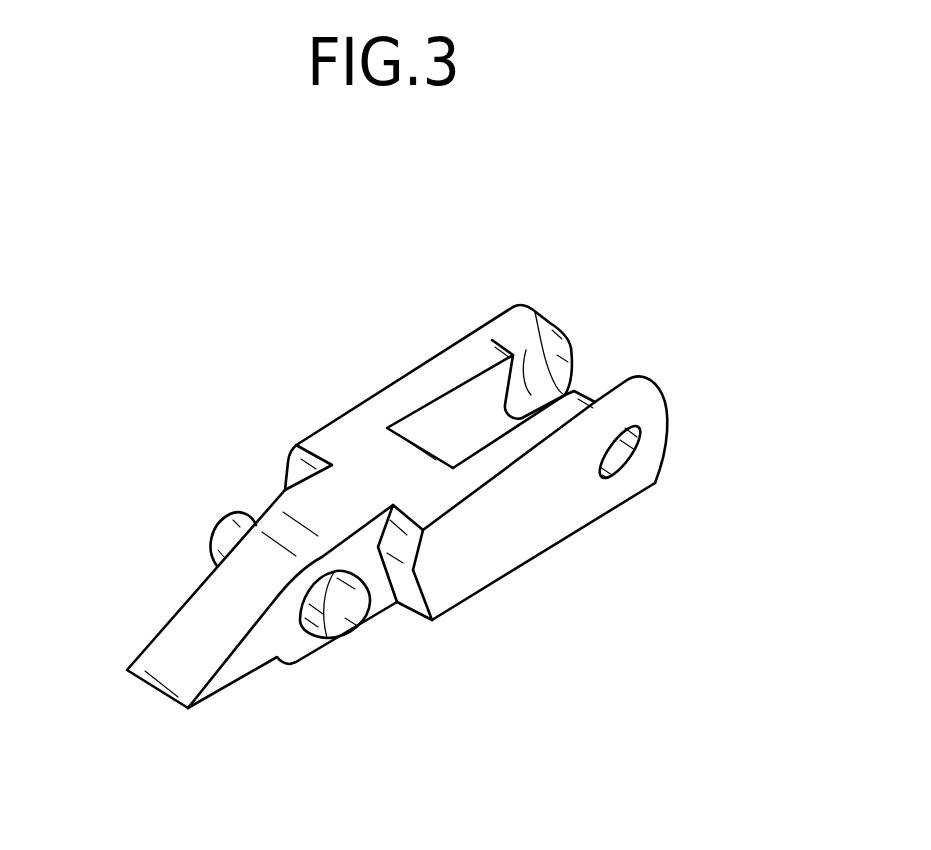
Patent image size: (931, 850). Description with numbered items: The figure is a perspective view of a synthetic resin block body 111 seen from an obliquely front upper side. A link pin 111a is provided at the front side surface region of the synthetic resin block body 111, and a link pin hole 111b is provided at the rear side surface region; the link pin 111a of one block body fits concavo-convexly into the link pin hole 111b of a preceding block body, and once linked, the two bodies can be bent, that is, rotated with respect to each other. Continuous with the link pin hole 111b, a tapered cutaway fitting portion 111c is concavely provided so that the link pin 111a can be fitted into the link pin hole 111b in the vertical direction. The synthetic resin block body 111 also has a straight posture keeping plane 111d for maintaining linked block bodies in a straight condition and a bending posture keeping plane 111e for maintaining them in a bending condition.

The synthetic resin block body 111 is at (169, 345).
The link pin 111a is at (230, 532).
The link pin hole 111b is at (527, 396).
The tapered cutaway fitting portion 111c is at (523, 338).
The straight posture keeping plane 111d is at (230, 686).
The bending posture keeping plane 111e is at (408, 598).